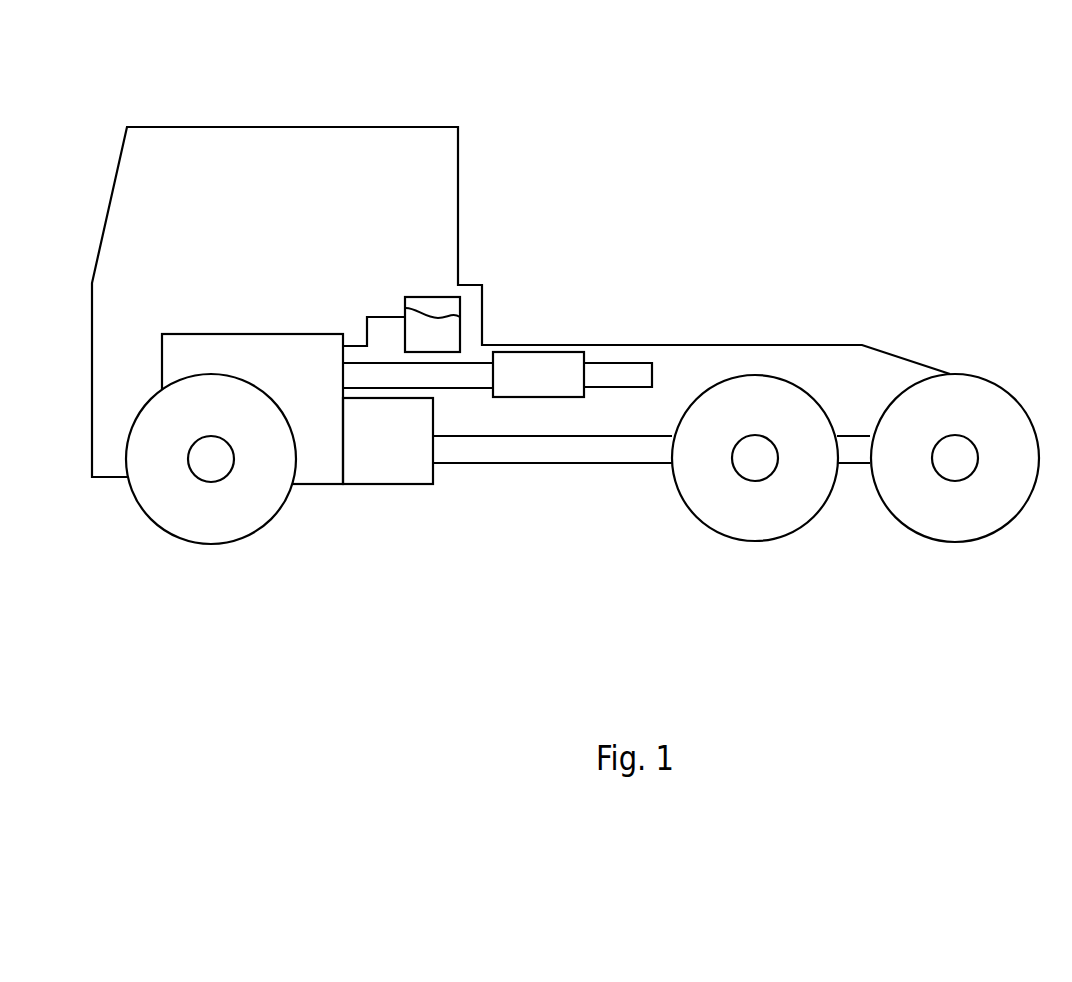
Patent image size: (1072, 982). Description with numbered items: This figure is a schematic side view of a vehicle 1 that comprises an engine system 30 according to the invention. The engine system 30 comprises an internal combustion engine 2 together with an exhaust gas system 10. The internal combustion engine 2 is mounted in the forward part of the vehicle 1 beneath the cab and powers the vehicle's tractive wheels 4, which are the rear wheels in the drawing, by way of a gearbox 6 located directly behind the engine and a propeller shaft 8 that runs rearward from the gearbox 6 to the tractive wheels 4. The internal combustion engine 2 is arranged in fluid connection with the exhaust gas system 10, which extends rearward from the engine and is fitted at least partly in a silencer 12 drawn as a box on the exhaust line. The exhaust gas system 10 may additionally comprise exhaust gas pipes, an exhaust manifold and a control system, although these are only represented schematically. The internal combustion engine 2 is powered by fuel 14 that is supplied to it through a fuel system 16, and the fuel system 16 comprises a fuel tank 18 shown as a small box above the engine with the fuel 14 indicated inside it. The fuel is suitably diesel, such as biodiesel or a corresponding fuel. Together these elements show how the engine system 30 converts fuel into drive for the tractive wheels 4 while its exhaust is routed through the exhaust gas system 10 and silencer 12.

The vehicle 1 is at (563, 117).
The internal combustion engine 2 is at (259, 334).
The tractive wheels 4 is at (802, 528).
The gearbox 6 is at (368, 484).
The propeller shaft 8 is at (632, 463).
The exhaust gas system 10 is at (525, 351).
The silencer 12 is at (562, 352).
The fuel 14 is at (440, 338).
The fuel system 16 is at (377, 312).
The fuel tank 18 is at (445, 297).
The engine system 30 is at (433, 388).